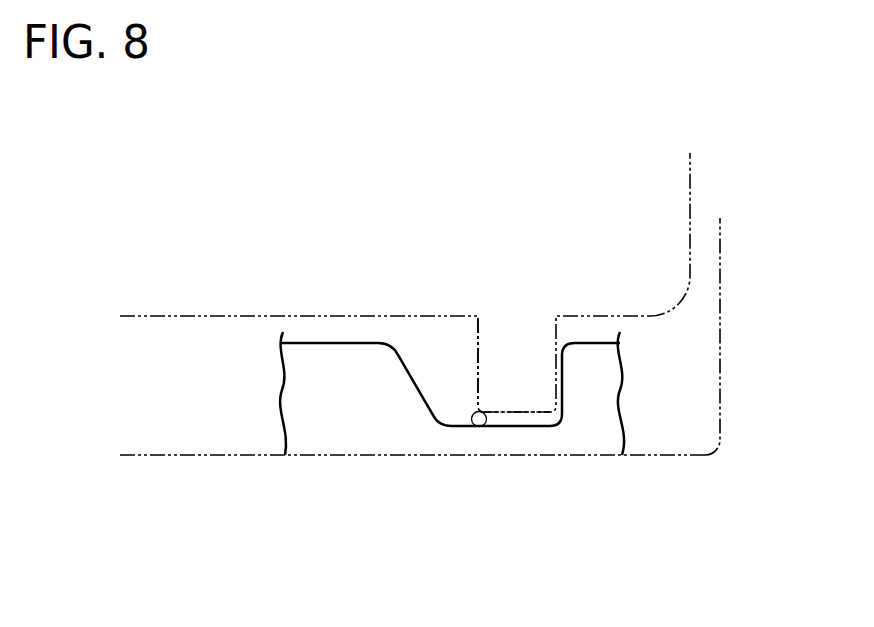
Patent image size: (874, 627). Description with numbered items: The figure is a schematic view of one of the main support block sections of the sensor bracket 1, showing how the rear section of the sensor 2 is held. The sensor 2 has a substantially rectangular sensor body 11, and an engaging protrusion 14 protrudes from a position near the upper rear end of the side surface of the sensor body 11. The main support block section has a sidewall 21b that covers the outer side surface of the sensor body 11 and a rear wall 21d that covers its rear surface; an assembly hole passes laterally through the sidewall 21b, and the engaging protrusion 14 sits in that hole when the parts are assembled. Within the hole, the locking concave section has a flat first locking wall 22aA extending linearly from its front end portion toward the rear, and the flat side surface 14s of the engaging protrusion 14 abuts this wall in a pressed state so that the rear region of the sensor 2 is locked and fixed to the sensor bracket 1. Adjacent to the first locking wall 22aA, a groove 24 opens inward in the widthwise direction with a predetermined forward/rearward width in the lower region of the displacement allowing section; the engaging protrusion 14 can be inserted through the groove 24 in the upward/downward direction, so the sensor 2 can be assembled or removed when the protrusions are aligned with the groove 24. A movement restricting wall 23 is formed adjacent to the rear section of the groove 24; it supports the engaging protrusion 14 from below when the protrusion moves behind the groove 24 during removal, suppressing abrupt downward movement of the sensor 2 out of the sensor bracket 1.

The sensor bracket 1 is at (479, 405).
The sensor 2 is at (453, 263).
The sensor body 11 is at (690, 207).
The engaging protrusion 14 is at (523, 412).
The side surface of the engaging protrusion 14s is at (478, 355).
The sidewall 21b is at (248, 455).
The rear wall 21d is at (720, 267).
The first locking wall 22aA is at (452, 470).
The movement restricting wall 23 is at (593, 385).
The groove 24 is at (486, 425).